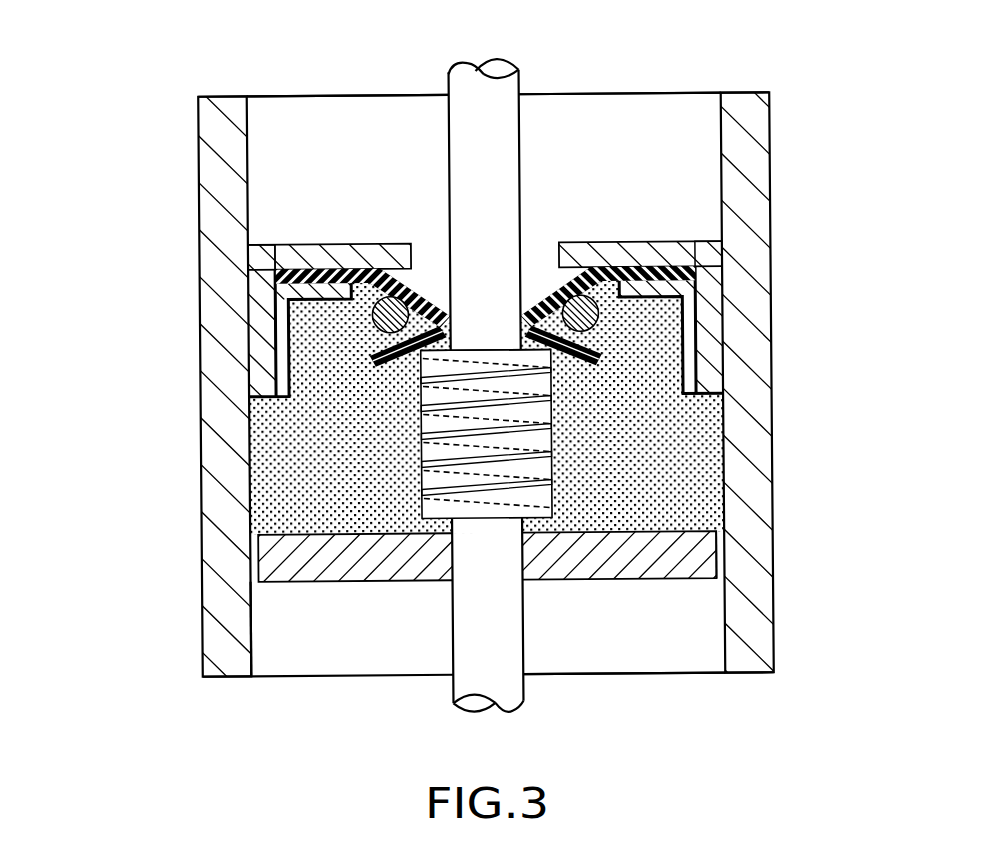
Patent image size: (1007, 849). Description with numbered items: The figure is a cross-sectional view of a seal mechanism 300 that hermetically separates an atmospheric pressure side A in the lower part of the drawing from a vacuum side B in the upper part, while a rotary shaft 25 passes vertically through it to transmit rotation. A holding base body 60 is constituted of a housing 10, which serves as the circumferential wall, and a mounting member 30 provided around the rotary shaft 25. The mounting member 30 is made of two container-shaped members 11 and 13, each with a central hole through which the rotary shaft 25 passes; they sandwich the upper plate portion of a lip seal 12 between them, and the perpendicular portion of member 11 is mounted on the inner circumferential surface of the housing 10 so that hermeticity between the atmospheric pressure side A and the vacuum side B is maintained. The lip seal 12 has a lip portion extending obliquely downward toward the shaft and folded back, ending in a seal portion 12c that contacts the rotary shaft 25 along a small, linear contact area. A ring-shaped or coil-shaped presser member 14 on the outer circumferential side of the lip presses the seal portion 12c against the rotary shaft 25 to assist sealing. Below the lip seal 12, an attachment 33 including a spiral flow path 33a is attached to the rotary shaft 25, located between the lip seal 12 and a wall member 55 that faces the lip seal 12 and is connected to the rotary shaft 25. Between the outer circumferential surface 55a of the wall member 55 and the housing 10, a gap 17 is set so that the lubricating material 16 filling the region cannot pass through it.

The housing 10 is at (222, 360).
The container-shaped member 11 is at (249, 246).
The lip seal 12 is at (648, 250).
The seal portion 12c is at (504, 336).
The container-shaped member 13 is at (276, 276).
The presser member 14 is at (600, 316).
The lubricating material 16 is at (320, 513).
The gap 17 is at (252, 583).
The rotary shaft 25 is at (516, 622).
The mounting member 30 is at (128, 235).
The attachment 33 is at (449, 322).
The spiral flow path 33a is at (560, 472).
The wall member 55 is at (387, 570).
The outer circumferential surface 55a is at (718, 559).
The holding base body 60 is at (78, 262).
The seal mechanism 300 is at (368, 203).
The atmospheric pressure side A is at (632, 639).
The vacuum side B is at (631, 184).